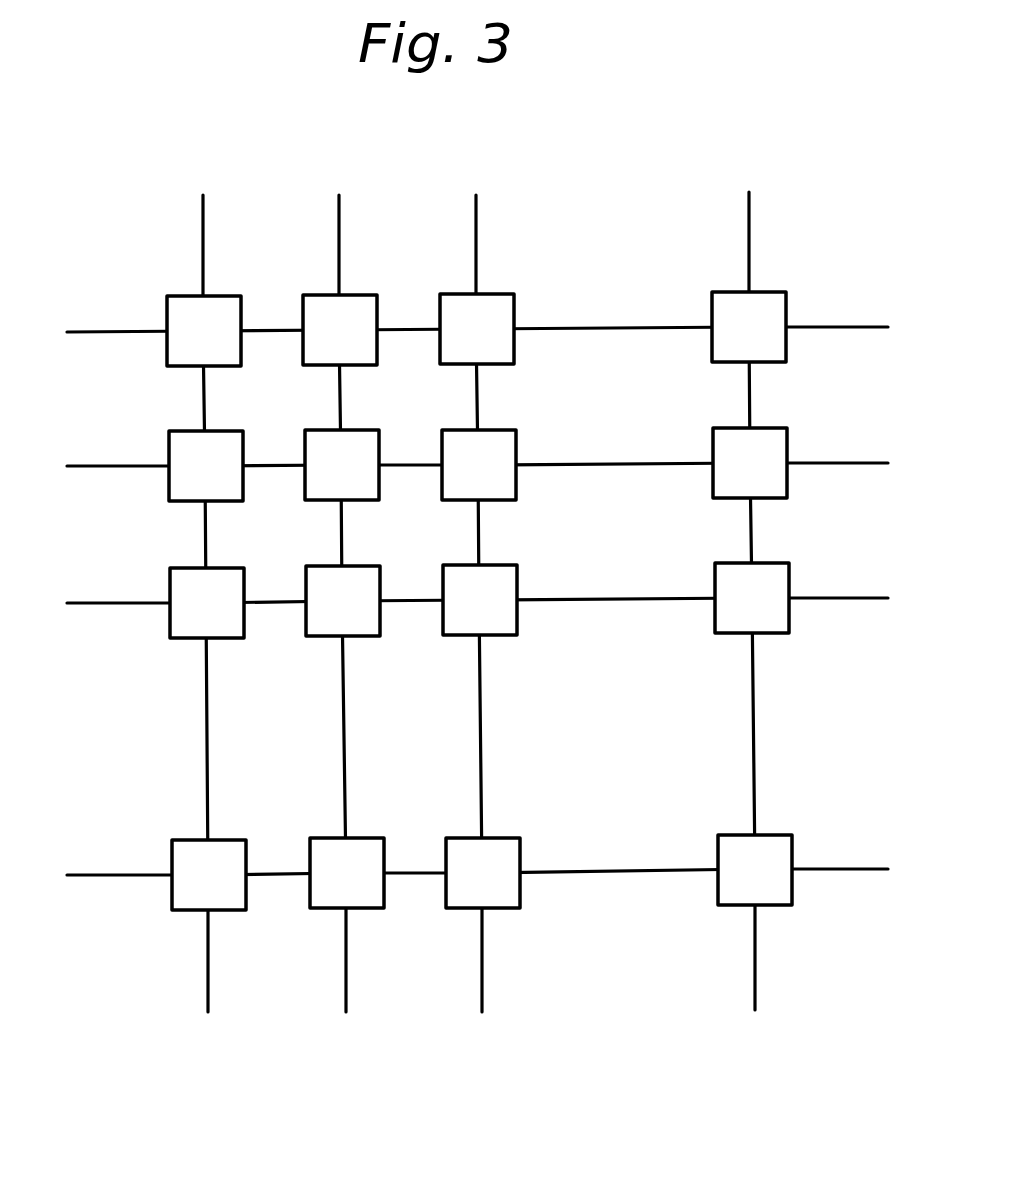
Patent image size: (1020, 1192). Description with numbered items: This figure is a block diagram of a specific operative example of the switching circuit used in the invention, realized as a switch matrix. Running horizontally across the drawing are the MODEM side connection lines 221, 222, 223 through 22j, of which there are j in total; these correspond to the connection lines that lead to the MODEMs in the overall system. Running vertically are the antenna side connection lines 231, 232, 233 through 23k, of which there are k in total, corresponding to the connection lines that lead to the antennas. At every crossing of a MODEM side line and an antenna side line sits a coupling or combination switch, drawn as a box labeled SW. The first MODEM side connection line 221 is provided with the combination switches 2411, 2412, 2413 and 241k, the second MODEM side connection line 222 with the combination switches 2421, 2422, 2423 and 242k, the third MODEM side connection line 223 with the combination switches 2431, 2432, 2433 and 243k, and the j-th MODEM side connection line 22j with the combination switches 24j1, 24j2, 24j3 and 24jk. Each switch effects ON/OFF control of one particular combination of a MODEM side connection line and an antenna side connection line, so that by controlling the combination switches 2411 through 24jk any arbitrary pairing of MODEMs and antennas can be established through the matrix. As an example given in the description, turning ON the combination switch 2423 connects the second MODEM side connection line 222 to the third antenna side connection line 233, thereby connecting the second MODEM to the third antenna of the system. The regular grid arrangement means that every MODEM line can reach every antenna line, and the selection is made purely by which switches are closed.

The MODEM side connection line 221 is at (92, 330).
The MODEM side connection line 222 is at (93, 465).
The MODEM side connection line 223 is at (93, 602).
The MODEM side connection line 22j is at (97, 874).
The antenna side connection line 231 is at (204, 211).
The antenna side connection line 232 is at (340, 211).
The antenna side connection line 233 is at (477, 211).
The antenna side connection line 23k is at (750, 210).
The combination switch 2411 is at (229, 296).
The combination switch 2412 is at (364, 295).
The combination switch 2413 is at (496, 294).
The combination switch 241k is at (772, 292).
The combination switch 2421 is at (236, 431).
The combination switch 2422 is at (364, 430).
The combination switch 2423 is at (500, 430).
The combination switch 242k is at (774, 428).
The combination switch 2431 is at (236, 568).
The combination switch 2432 is at (366, 566).
The combination switch 2433 is at (503, 565).
The combination switch 243k is at (777, 563).
The combination switch 24j1 is at (230, 840).
The combination switch 24j2 is at (367, 838).
The combination switch 24j3 is at (503, 838).
The combination switch 24jk is at (782, 835).